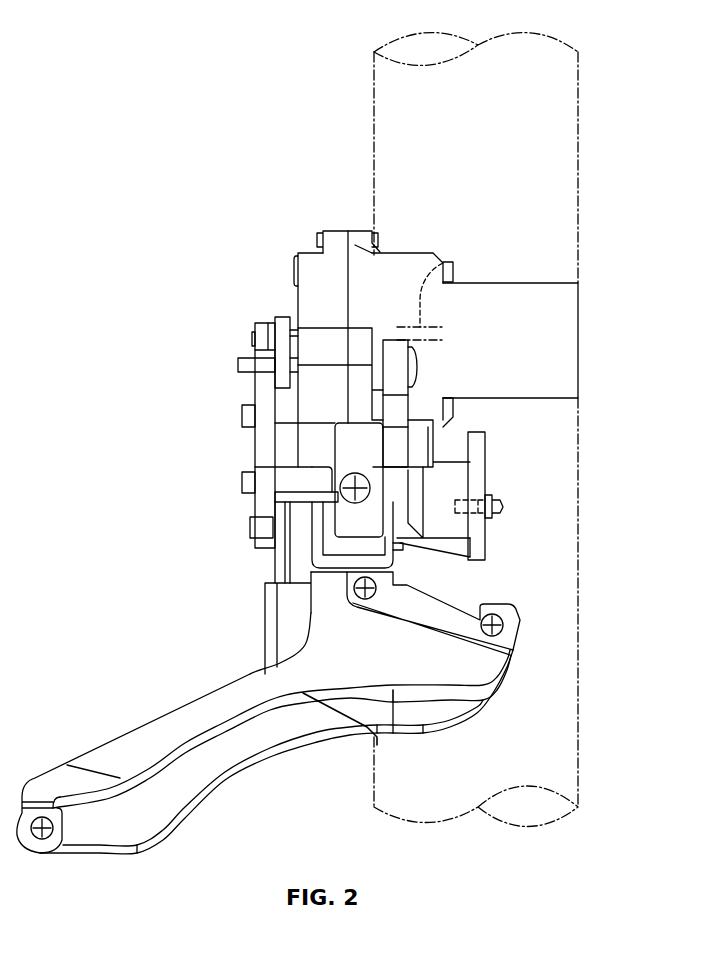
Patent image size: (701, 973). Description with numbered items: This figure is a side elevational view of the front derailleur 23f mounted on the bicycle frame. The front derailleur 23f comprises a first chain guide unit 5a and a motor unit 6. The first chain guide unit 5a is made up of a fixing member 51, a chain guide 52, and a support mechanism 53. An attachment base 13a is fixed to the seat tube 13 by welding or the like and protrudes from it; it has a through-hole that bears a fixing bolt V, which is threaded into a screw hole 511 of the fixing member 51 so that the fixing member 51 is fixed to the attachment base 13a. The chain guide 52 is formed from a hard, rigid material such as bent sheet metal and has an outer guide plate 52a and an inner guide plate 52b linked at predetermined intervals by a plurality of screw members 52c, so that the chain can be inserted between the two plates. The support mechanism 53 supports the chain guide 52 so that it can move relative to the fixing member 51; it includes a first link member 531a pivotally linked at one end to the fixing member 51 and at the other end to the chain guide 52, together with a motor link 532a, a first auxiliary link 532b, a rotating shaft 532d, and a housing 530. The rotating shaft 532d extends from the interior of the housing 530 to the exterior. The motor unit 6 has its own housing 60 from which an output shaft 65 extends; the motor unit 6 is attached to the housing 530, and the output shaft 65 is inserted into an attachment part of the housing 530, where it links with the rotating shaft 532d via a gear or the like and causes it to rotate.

The front derailleur 23f is at (212, 147).
The seat tube 13 is at (374, 147).
The attachment base 13a is at (485, 433).
The housing 530 is at (408, 278).
The output shaft 65 is at (450, 262).
The motor unit 6 is at (487, 319).
The housing 60 is at (525, 298).
The motor link 532a is at (278, 320).
The rotating shaft 532d is at (240, 361).
The first auxiliary link 532b is at (260, 390).
The first link member 531a is at (353, 441).
The support mechanism 53 is at (258, 450).
The first chain guide unit 5a is at (187, 590).
The fixing member 51 is at (437, 562).
The screw hole 511 is at (476, 511).
The fixing bolt V is at (505, 507).
The chain guide 52 is at (288, 751).
The outer guide plate 52a is at (173, 727).
The inner guide plate 52b is at (253, 753).
The screw members 52c is at (373, 593).